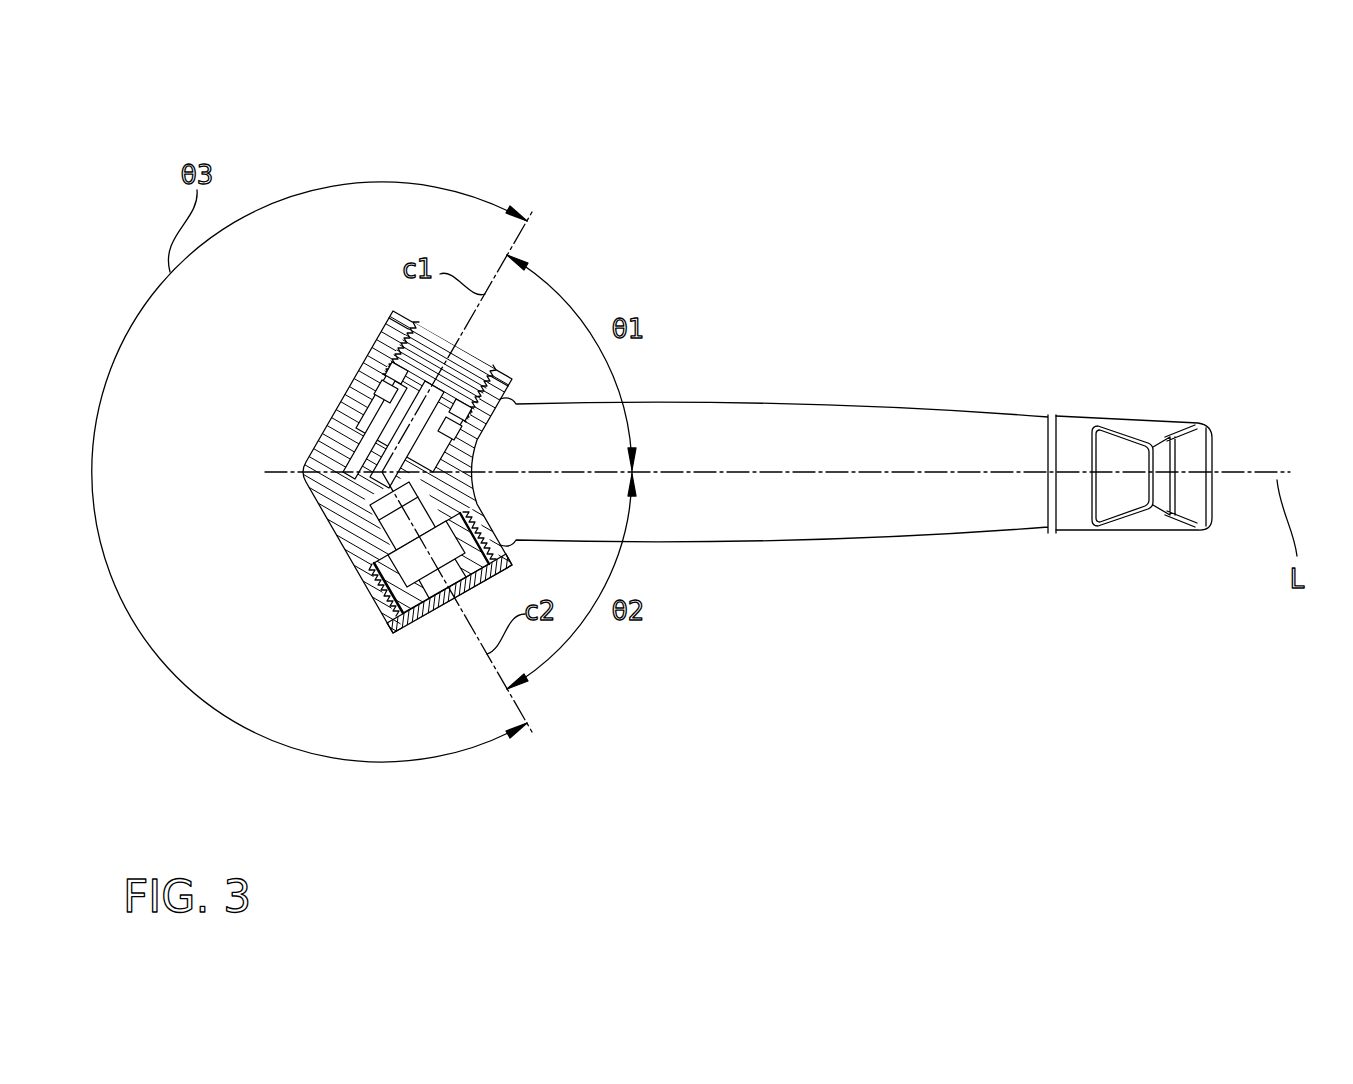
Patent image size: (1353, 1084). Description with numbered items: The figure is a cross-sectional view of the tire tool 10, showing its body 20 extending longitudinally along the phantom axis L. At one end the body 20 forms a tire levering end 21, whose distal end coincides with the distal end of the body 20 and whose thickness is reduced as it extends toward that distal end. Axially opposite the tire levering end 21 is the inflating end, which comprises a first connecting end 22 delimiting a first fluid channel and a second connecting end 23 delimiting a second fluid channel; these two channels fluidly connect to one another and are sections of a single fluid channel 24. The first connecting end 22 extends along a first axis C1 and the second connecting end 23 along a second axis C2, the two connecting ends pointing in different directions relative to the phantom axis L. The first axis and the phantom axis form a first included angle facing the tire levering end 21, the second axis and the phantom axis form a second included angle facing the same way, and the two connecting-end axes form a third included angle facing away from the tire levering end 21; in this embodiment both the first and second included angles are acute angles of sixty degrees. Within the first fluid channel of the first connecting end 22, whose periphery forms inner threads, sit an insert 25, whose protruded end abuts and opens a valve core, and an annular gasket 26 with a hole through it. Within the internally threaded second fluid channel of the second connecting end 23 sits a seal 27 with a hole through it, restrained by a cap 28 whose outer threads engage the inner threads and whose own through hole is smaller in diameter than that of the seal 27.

The tire tool 10 is at (869, 384).
The body 20 is at (809, 400).
The tire levering end 21 is at (1192, 495).
The first connecting end 22 is at (445, 372).
The second connecting end 23 is at (398, 628).
The fluid channel 24 is at (380, 514).
The insert 25 is at (368, 408).
The gasket 26 is at (375, 388).
The seal 27 is at (384, 573).
The cap 28 is at (410, 640).